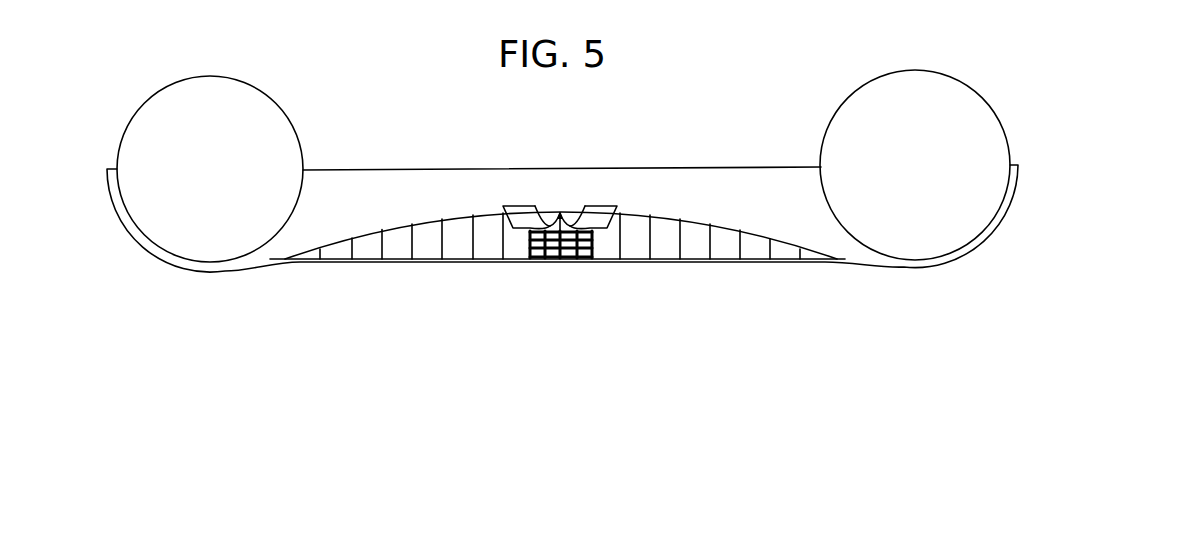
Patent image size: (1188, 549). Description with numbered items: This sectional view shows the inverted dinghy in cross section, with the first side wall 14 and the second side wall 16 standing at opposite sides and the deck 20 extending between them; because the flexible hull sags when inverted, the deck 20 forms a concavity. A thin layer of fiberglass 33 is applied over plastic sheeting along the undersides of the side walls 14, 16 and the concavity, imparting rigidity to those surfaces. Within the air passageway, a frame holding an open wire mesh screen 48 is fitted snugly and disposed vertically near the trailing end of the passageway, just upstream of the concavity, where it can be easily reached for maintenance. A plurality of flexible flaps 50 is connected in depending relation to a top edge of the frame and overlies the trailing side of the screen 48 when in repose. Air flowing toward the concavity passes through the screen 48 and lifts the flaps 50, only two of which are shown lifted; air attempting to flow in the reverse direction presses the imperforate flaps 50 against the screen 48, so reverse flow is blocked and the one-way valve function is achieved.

The first side wall 14 is at (931, 169).
The second side wall 16 is at (229, 187).
The deck 20 is at (443, 260).
The fiberglass layer 33 is at (121, 220).
The open wire mesh screen 48 is at (545, 264).
The flexible flaps 50 is at (603, 215).